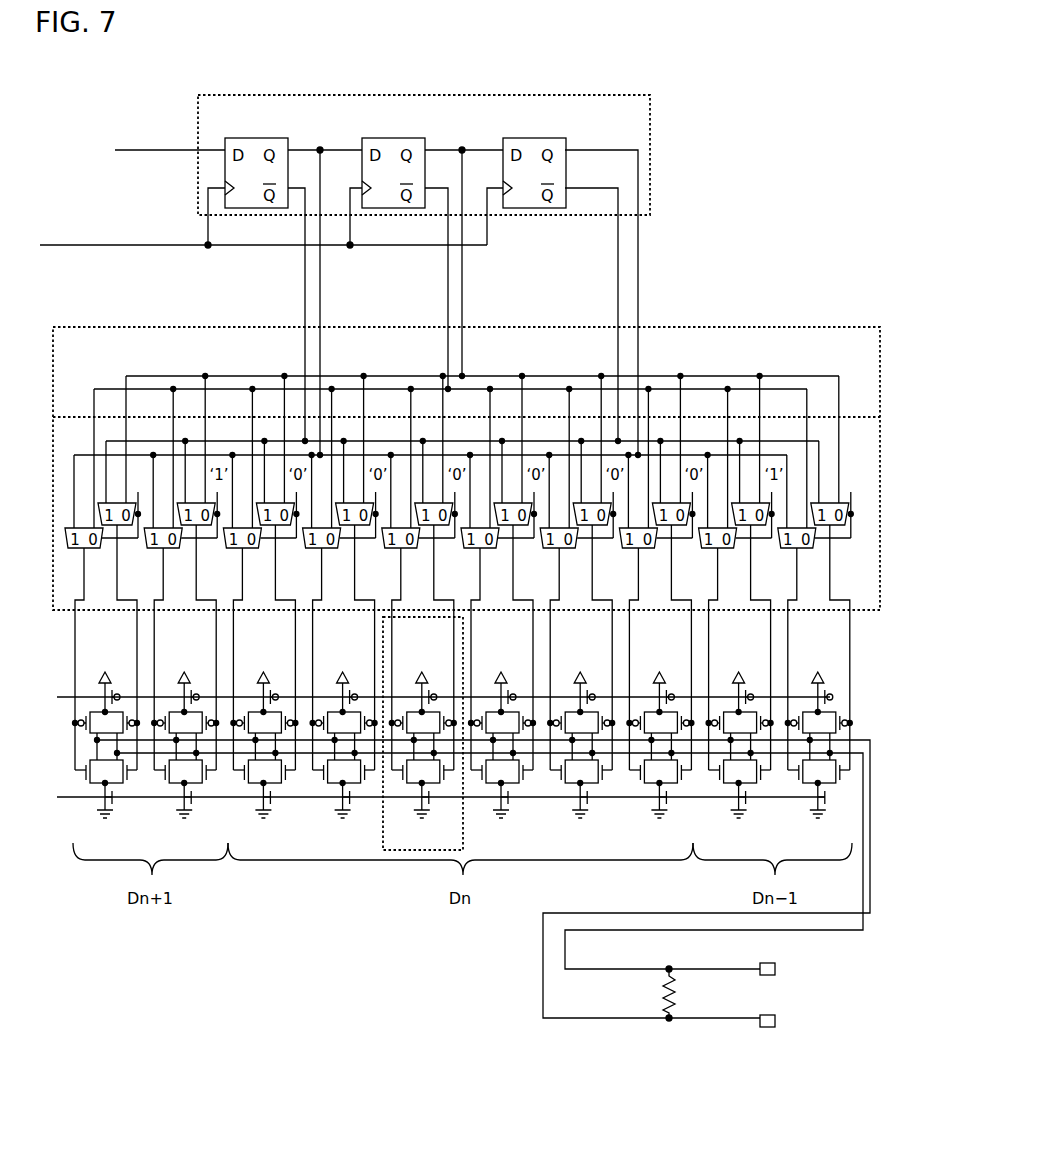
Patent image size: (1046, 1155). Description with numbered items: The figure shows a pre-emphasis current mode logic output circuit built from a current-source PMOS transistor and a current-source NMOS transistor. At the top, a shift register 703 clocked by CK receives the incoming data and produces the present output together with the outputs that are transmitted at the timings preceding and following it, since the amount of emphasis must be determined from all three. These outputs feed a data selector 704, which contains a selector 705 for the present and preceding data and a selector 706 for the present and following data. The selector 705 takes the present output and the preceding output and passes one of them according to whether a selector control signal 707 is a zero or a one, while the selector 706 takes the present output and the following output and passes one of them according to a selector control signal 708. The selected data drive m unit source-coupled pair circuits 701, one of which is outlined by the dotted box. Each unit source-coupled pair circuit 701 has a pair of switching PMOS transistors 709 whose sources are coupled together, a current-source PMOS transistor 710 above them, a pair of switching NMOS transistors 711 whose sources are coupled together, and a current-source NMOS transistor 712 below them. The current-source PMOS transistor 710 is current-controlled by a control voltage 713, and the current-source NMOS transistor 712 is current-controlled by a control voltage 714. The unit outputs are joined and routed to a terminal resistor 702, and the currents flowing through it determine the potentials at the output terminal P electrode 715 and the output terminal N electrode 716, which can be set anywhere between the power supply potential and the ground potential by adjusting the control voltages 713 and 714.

The unit source-coupled pair circuit 701 is at (415, 843).
The terminal resistor 702 is at (690, 1008).
The shift register 703 is at (416, 108).
The data selector 704 is at (152, 328).
The Dn/Dn−1 selector 705 is at (860, 606).
The Dn/Dn+1 selector 706 is at (62, 606).
The selector control signal 707 is at (852, 455).
The selector control signal 708 is at (457, 455).
The switching PMOS transistors 709 is at (432, 722).
The current-source PMOS transistor 710 is at (438, 692).
The switching NMOS transistors 711 is at (430, 773).
The current-source NMOS transistor 712 is at (435, 803).
The control voltage 713 is at (57, 697).
The control voltage 714 is at (57, 797).
The output terminal P electrode 715 is at (778, 966).
The output terminal N electrode 716 is at (778, 1022).